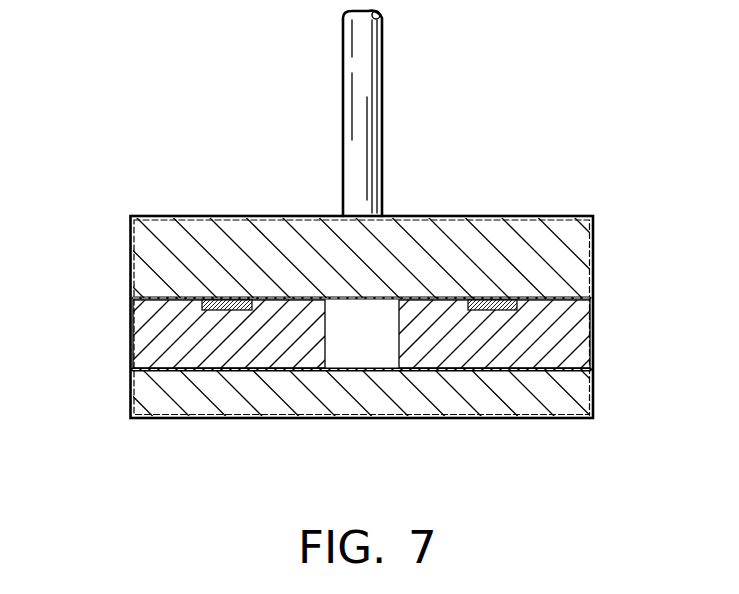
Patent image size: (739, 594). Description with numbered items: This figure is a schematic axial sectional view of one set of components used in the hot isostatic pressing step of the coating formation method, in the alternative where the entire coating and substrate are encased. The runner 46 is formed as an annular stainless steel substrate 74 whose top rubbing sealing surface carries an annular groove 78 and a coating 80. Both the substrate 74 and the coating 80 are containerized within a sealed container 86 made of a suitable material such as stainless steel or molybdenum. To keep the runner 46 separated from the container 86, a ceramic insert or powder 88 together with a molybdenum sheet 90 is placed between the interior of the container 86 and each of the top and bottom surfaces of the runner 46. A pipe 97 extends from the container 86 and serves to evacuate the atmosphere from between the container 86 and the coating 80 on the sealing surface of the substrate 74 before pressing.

The runner 46 is at (160, 335).
The substrate 74 is at (558, 340).
The groove 78 is at (238, 312).
The coating 80 is at (230, 304).
The container 86 is at (595, 232).
The ceramic insert or powder 88 is at (442, 252).
The molybdenum sheet 90 is at (177, 298).
The pipe 97 is at (343, 85).